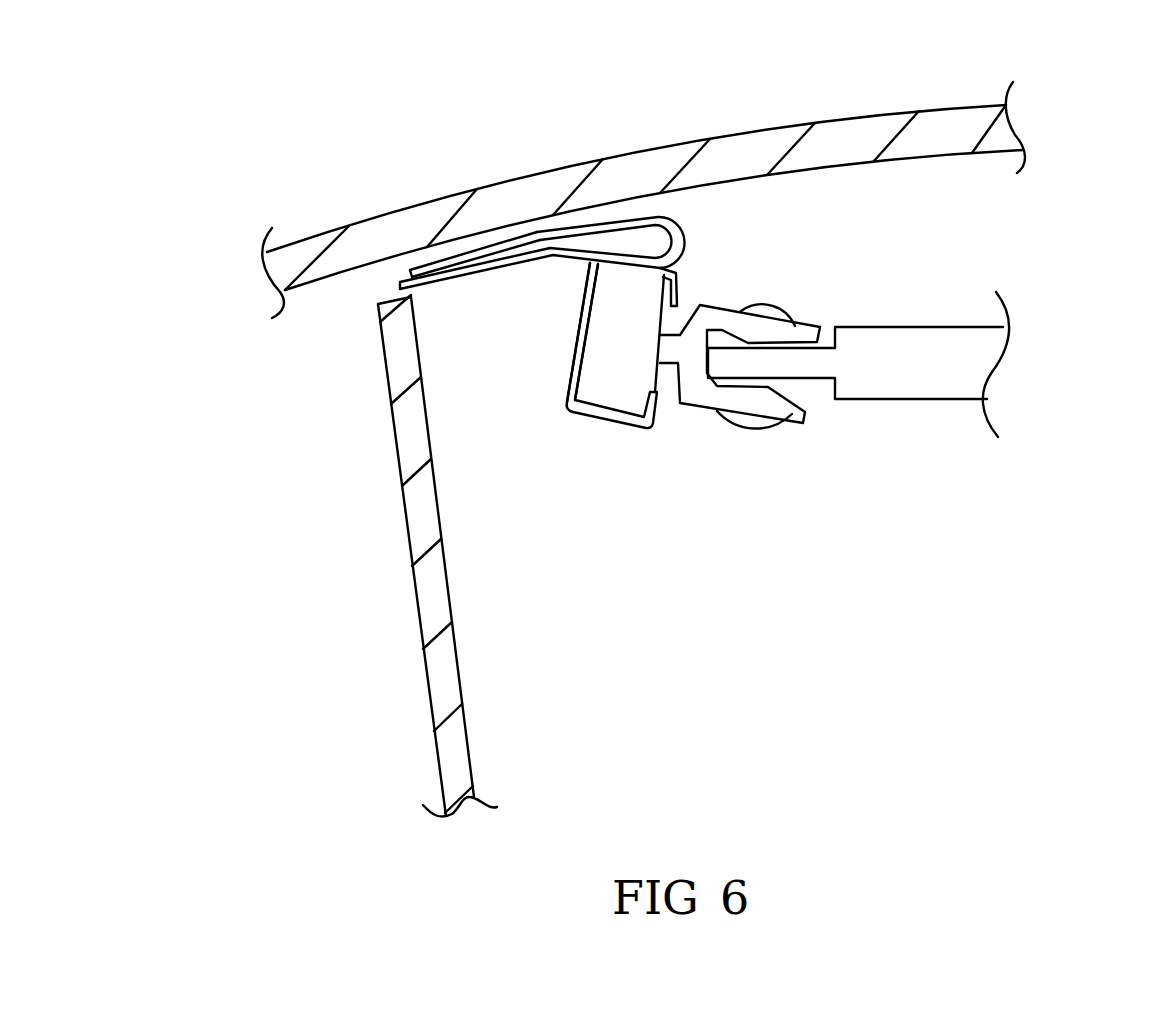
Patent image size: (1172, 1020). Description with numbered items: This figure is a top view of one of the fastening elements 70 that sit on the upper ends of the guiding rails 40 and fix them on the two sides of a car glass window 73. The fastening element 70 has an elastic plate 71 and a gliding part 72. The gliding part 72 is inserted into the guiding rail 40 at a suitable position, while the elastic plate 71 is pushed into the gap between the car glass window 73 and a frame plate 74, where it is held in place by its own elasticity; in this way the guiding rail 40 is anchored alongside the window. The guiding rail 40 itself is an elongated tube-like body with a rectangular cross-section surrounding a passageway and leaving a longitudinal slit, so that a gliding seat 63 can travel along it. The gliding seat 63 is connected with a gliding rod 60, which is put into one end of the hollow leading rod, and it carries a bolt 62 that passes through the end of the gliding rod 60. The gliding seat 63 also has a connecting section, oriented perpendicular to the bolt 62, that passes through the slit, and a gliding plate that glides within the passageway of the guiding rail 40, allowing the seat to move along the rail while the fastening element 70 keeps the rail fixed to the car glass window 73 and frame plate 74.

The guiding rail 40 is at (610, 363).
The gliding rod 60 is at (948, 412).
The bolt 62 is at (747, 422).
The gliding seat 63 is at (712, 316).
The fastening element 70 is at (700, 218).
The elastic plate 71 is at (478, 254).
The gliding part 72 is at (575, 340).
The car glass window 73 is at (320, 247).
The frame plate 74 is at (436, 603).